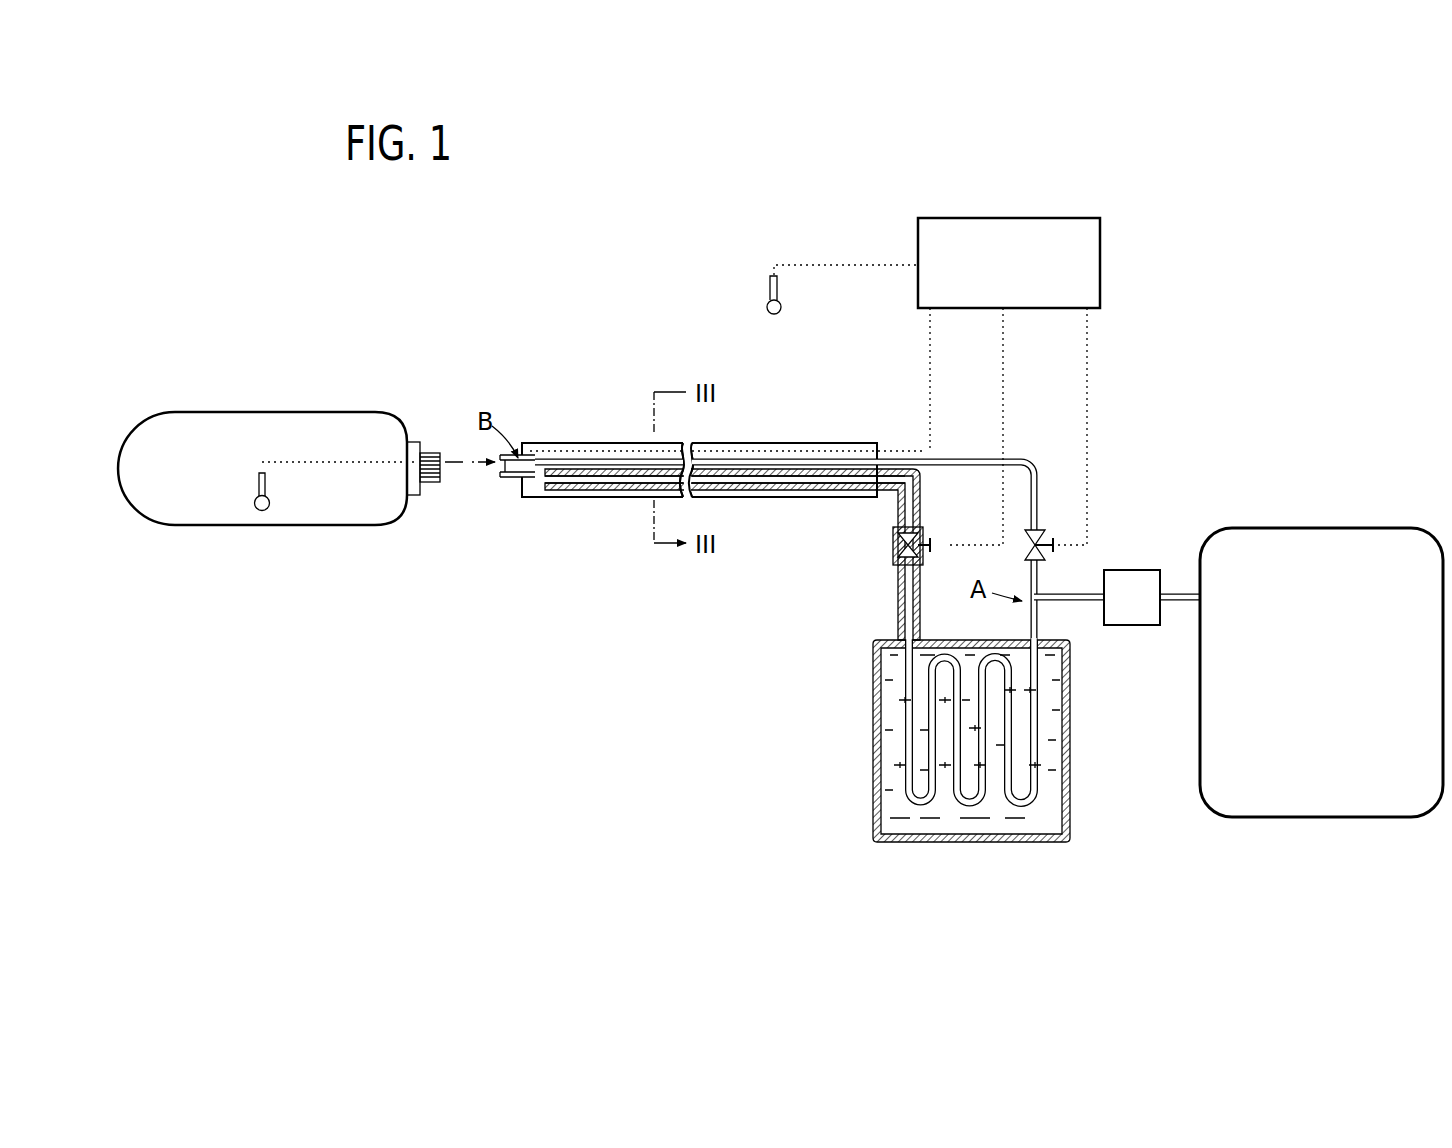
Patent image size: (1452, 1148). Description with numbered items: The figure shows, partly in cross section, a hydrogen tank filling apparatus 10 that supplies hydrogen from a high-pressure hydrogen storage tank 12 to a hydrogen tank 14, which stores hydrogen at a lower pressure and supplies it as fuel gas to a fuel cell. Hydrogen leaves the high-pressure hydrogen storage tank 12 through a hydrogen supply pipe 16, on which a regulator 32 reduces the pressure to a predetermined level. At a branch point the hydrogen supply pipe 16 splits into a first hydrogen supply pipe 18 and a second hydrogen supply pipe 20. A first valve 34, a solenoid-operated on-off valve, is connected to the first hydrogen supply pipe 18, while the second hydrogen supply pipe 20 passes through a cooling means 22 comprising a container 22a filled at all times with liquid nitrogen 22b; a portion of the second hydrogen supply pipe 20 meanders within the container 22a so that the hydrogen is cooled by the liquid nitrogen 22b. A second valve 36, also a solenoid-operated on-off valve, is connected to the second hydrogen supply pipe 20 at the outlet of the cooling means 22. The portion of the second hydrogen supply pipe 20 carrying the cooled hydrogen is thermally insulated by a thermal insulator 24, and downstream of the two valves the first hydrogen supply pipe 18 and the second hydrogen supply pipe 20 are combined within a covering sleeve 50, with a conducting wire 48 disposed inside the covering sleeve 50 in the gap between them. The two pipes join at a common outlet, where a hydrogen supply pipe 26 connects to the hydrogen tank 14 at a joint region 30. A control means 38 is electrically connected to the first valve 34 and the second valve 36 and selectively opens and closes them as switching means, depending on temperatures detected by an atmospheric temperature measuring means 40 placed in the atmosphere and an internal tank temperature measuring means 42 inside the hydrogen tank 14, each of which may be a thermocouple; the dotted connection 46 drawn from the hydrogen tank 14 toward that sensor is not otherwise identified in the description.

The hydrogen tank filling apparatus 10 is at (1292, 370).
The high-pressure hydrogen storage tank 12 is at (1362, 528).
The hydrogen tank 14 is at (233, 412).
The hydrogen supply pipe 16 is at (1083, 602).
The first hydrogen supply pipe 18 is at (809, 522).
The second hydrogen supply pipe 20 is at (761, 554).
The cooling means 22 is at (992, 758).
The container 22a is at (1071, 810).
The liquid nitrogen 22b is at (1071, 695).
The thermal insulator 24 is at (816, 491).
The hydrogen supply pipe 26 is at (504, 479).
The joint region 30 is at (460, 515).
The regulator 32 is at (1130, 570).
The first valve 34 is at (1050, 538).
The second valve 36 is at (934, 543).
The control means 38 is at (1062, 218).
The atmospheric temperature measuring means 40 is at (782, 306).
The internal tank temperature measuring means 42 is at (270, 502).
The signal line 46 is at (296, 461).
The conducting wire 48 is at (597, 450).
The covering sleeve 50 is at (822, 443).